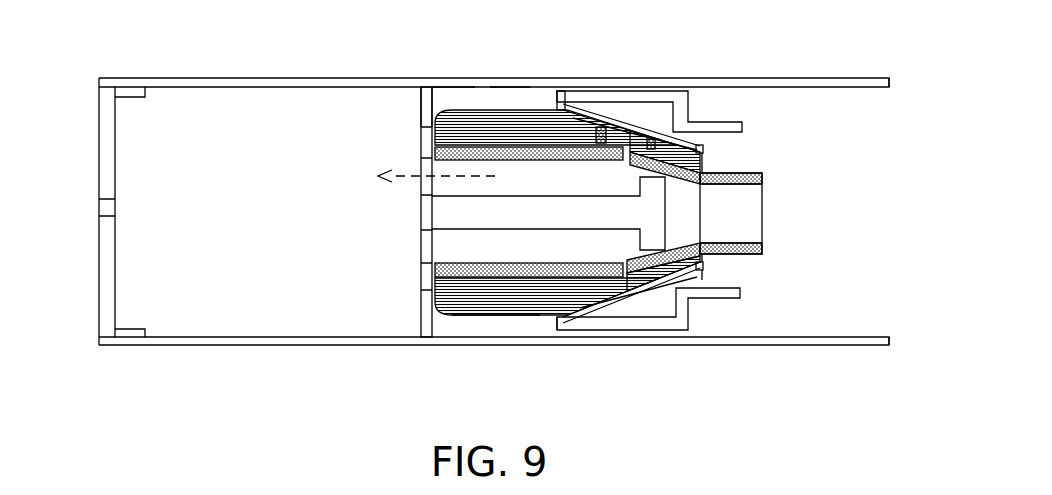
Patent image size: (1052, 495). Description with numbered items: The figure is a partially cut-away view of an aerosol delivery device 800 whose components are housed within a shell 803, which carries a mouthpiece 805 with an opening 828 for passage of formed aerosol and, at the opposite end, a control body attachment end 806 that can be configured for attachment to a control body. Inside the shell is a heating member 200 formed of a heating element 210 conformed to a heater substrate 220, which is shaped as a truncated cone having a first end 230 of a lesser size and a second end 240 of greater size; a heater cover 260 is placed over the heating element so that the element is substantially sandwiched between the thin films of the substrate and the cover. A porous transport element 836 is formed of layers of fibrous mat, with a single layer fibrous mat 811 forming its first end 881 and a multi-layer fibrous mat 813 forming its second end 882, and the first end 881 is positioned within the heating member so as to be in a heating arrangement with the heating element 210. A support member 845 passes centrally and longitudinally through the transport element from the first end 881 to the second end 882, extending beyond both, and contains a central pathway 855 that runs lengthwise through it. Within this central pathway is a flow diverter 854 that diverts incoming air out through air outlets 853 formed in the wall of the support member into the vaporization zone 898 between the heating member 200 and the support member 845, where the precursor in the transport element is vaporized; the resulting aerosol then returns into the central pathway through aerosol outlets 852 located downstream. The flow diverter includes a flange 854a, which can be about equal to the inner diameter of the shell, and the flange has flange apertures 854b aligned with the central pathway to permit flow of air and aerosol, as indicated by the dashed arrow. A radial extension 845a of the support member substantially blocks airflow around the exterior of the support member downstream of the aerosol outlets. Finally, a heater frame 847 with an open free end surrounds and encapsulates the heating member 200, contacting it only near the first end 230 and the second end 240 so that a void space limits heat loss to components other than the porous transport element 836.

The aerosol delivery device 800 is at (126, 26).
The shell 803 is at (228, 77).
The mouthpiece 805 is at (107, 117).
The control body attachment end 806 is at (922, 95).
The opening 828 is at (98, 205).
The flow diverter 854 is at (473, 222).
The flange 854a is at (424, 105).
The flange apertures 854b is at (423, 242).
The support member 845 is at (470, 152).
The radial extension 845a is at (575, 118).
The second end 882 is at (453, 98).
The porous transport element 836 is at (511, 98).
The second end 240 is at (544, 100).
The heater substrate 220 is at (575, 108).
The vaporization zone 898 is at (652, 127).
The aerosol outlets 852 is at (640, 140).
The first end 881 is at (715, 158).
The air outlets 853 is at (700, 183).
The central pathway 855 is at (455, 296).
The single layer fibrous mat 811 is at (703, 257).
The first end 230 is at (721, 275).
The heater frame 847 is at (708, 298).
The heating element 210 is at (662, 295).
The heating member 200 is at (621, 318).
The heater cover 260 is at (577, 300).
The multi-layer fibrous mat 813 is at (503, 307).